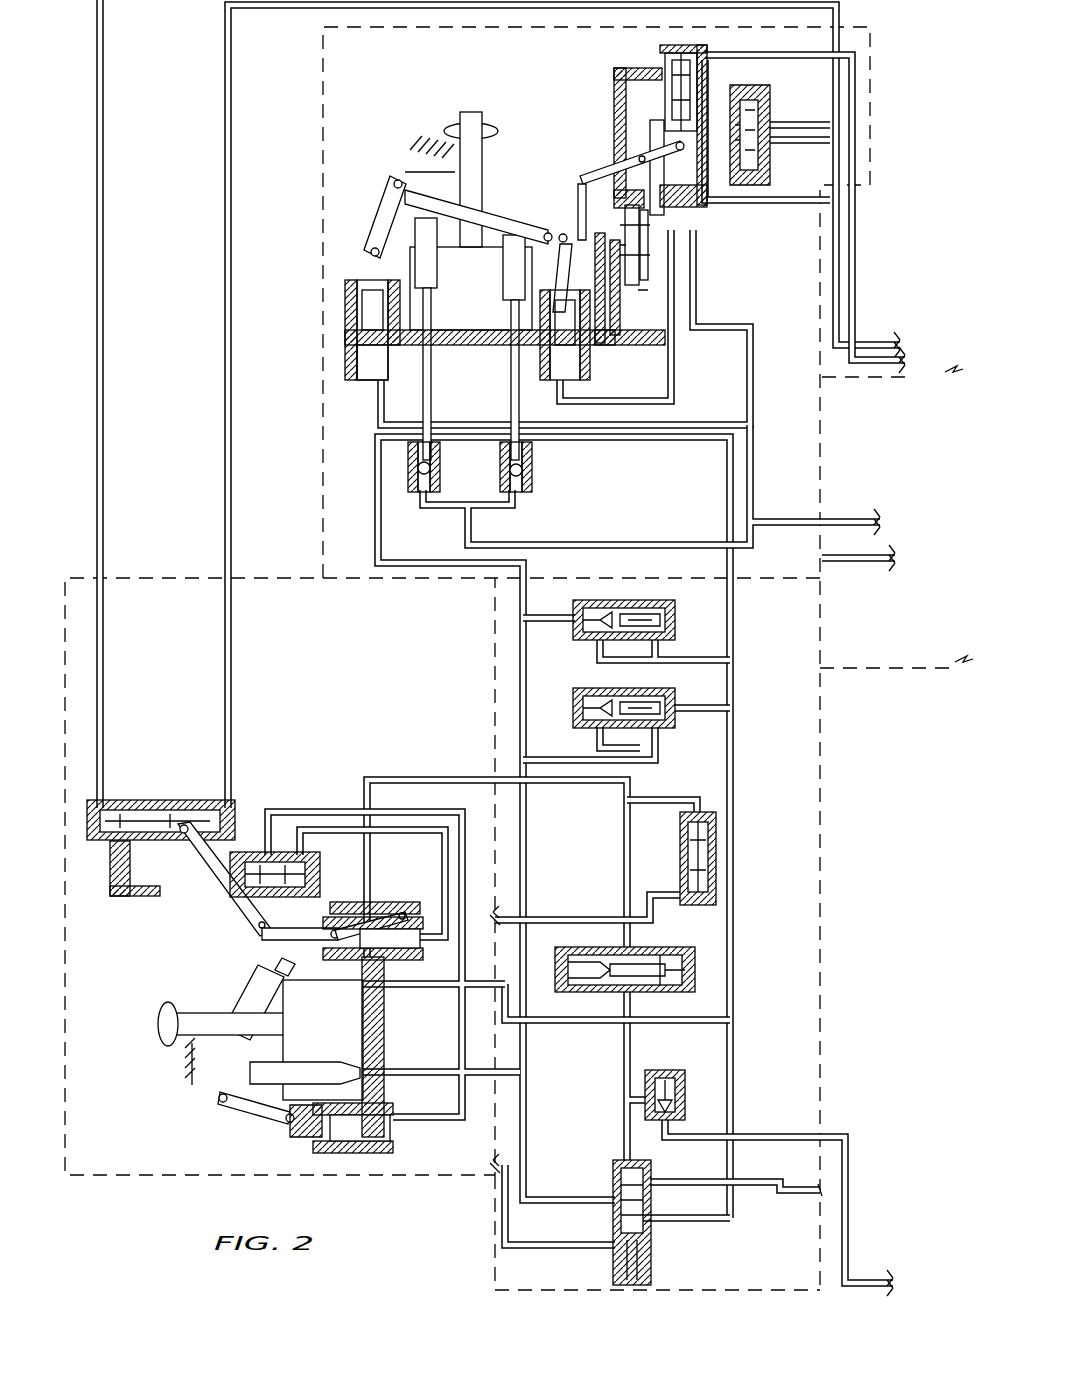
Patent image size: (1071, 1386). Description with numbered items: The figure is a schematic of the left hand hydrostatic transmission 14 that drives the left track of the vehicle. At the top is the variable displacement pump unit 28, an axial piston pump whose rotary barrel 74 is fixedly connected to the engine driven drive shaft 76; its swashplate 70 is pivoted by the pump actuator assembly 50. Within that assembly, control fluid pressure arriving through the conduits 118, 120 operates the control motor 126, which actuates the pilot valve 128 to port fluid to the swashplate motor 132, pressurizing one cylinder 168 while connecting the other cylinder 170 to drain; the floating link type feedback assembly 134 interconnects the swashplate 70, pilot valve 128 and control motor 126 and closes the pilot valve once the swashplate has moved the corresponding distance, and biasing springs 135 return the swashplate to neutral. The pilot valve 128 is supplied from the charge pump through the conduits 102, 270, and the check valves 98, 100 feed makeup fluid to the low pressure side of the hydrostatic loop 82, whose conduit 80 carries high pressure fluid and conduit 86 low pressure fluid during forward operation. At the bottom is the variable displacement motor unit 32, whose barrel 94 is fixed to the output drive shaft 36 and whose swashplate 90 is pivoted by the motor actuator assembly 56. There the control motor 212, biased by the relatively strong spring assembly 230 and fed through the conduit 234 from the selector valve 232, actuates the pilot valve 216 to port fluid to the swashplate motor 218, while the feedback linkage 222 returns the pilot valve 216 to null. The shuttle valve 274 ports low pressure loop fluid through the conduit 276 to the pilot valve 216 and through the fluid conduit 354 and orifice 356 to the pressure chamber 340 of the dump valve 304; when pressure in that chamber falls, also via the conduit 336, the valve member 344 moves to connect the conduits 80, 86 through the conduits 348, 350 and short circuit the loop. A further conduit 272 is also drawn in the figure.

The left hand hydrostatic transmission 14 is at (313, 125).
The variable displacement pump unit 28 is at (405, 112).
The pump actuator assembly 50 is at (580, 95).
The control motor 126 is at (660, 52).
The selector valve 232 is at (770, 105).
The floating link type feedback assembly 134 is at (610, 165).
The drive shaft 76 is at (482, 160).
The swashplate 70 is at (505, 210).
The pilot valve 128 is at (628, 222).
The biasing springs 135 is at (345, 330).
The rotary barrel 74 is at (470, 312).
The swashplate motor 132 is at (345, 380).
The cylinder 168 is at (370, 390).
The cylinder 170 is at (585, 375).
The conduit 270 is at (752, 380).
The conduit 118 is at (866, 350).
The conduit 120 is at (850, 365).
The check valve 98 is at (438, 482).
The check valve 100 is at (536, 485).
The conduit 102 is at (860, 518).
The conduit 234 is at (104, 385).
The conduit 86 is at (525, 668).
The conduit 80 is at (734, 645).
The hydrostatic loop 82 is at (740, 715).
The spring assembly 230 is at (160, 805).
The pilot valve 216 is at (250, 845).
The conduit 276 is at (456, 778).
The control motor 212 is at (108, 860).
The feedback linkage 222 is at (210, 900).
The shuttle valve 274 is at (690, 908).
The motor actuator assembly 56 is at (158, 958).
The swashplate 90 is at (252, 972).
The drive shaft 36 is at (158, 1026).
The barrel 94 is at (368, 1022).
The variable displacement motor unit 32 is at (185, 1112).
The fluid conduit 354 is at (622, 1046).
The orifice 356 is at (625, 1108).
The conduit 272 is at (425, 1120).
The swashplate motor 218 is at (398, 1158).
The dump valve 304 is at (595, 1168).
The pressure chamber 340 is at (643, 1170).
The valve member 344 is at (640, 1190).
The conduit 348 is at (542, 1202).
The conduit 350 is at (686, 1222).
The conduit 336 is at (876, 1280).